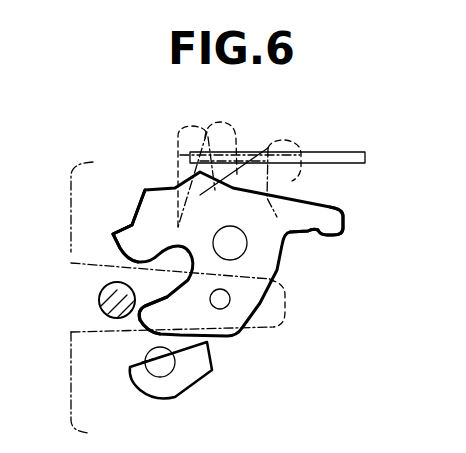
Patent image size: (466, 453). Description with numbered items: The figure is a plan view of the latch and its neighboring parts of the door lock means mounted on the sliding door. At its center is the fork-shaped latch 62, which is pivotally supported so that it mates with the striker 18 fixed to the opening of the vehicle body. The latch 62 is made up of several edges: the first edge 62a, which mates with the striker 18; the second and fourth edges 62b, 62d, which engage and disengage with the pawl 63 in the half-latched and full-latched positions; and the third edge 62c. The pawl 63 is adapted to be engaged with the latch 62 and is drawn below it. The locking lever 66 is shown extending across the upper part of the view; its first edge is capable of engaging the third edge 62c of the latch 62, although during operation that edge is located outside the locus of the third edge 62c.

The striker 18 is at (98, 310).
The latch 62 is at (283, 258).
The first edge 62a is at (114, 247).
The second edge 62b is at (155, 318).
The third edge 62c is at (333, 222).
The fourth edge 62d is at (132, 222).
The pawl 63 is at (188, 375).
The locking lever 66 is at (337, 163).